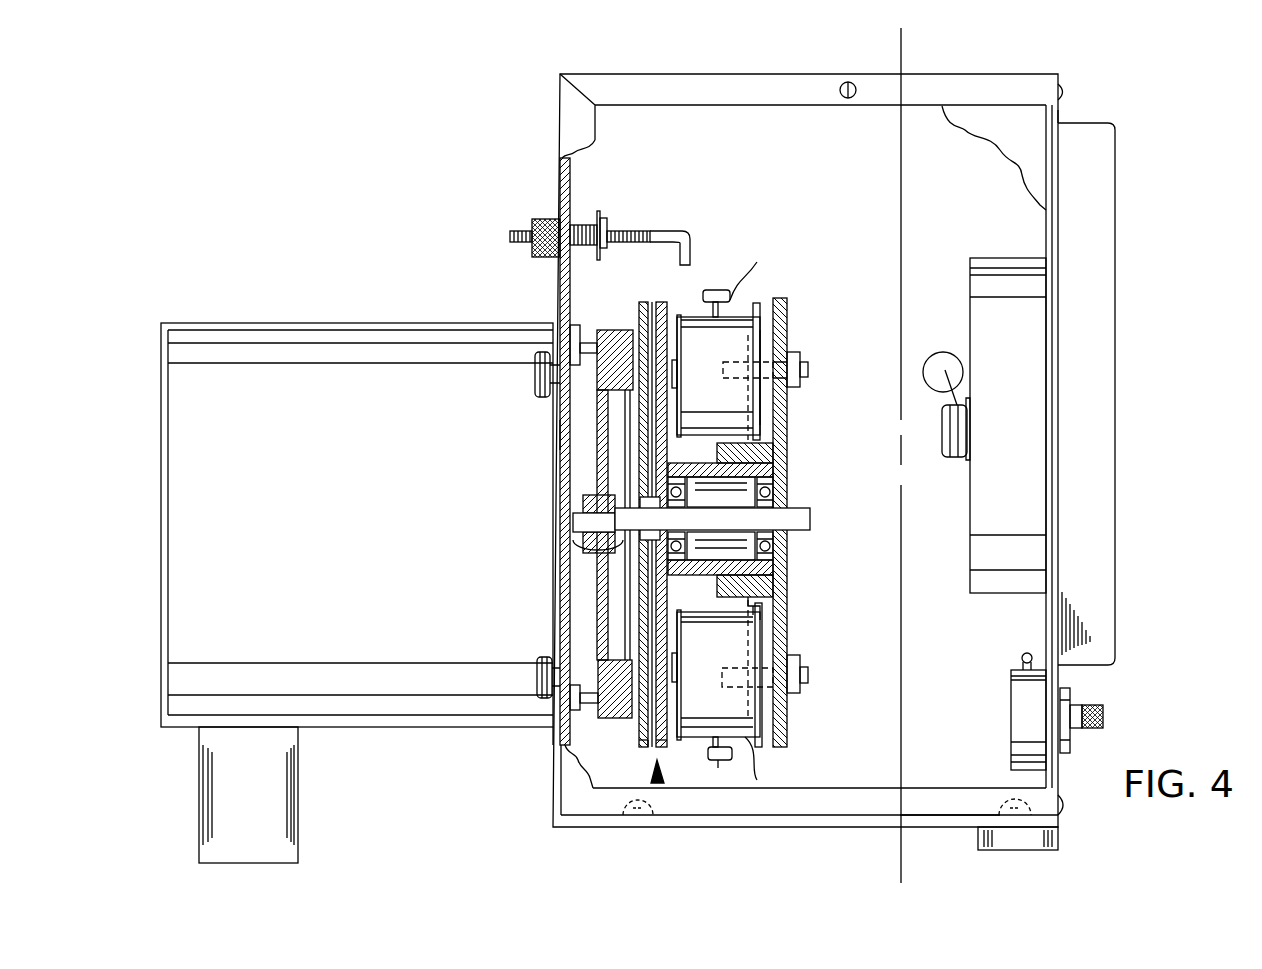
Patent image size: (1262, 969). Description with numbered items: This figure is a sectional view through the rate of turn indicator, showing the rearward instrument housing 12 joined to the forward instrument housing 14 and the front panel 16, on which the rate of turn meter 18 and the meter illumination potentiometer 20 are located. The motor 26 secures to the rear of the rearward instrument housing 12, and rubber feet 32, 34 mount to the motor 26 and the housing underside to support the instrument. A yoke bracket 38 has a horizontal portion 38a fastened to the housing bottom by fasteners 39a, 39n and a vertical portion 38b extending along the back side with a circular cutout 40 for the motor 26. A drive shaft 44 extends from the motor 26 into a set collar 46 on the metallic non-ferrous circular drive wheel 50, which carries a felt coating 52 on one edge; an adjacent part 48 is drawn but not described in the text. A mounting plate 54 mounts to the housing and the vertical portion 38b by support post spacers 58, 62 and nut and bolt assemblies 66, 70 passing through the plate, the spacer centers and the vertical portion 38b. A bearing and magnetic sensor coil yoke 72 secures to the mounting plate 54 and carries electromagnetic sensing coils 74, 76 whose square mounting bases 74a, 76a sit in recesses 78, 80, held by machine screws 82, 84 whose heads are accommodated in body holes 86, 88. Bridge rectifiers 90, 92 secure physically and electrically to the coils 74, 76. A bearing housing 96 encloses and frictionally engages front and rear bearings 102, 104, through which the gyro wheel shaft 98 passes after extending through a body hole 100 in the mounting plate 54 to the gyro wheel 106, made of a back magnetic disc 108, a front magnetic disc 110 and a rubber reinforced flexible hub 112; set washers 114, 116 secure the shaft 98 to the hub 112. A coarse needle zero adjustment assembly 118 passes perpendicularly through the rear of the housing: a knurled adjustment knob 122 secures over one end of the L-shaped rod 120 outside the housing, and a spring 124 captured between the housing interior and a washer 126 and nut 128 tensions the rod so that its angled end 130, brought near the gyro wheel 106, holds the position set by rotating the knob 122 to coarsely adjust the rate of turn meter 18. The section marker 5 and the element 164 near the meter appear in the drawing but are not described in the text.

The section line 5- 5 is at (863, 877).
The rearward instrument housing 12 is at (981, 88).
The forward instrument housing 14 is at (1010, 128).
The front panel 16 is at (1060, 117).
The rate of turn meter 18 is at (1105, 318).
The meter illumination potentiometer 20 is at (1017, 700).
The motor 26 is at (262, 363).
The rubber foot 32 is at (282, 825).
The rubber foot 34 is at (1018, 838).
The yoke bracket 38 is at (557, 410).
The horizontal portion 38a is at (938, 818).
The vertical portion 38b is at (557, 435).
The fastener 39a is at (640, 815).
The fastener 39n is at (1008, 800).
The circular cutout 40 is at (556, 738).
The drive shaft 44 is at (578, 520).
The set collar 46 is at (590, 507).
The collar 48 is at (600, 543).
The circular drive wheel 50 is at (608, 330).
The felt coating 52 is at (630, 328).
The mounting plate 54 is at (785, 302).
The support post spacer 58 is at (562, 320).
The support post spacer 62 is at (598, 650).
The nut and bolt assembly 66 is at (797, 363).
The nut and bolt assembly 70 is at (798, 668).
The bearing and magnetic sensor coil yoke 72 is at (768, 410).
The electromagnetic sensing coil 74 is at (698, 335).
The square mounting base 74a is at (758, 305).
The electromagnetic sensing coil 76 is at (703, 718).
The square mounting base 76a is at (762, 740).
The recess 78 is at (778, 452).
The recess 80 is at (773, 603).
The machine screw 82 is at (778, 365).
The machine screw 84 is at (792, 678).
The body hole 86 is at (788, 383).
The body hole 88 is at (777, 657).
The bridge rectifier 90 is at (717, 290).
The bridge rectifier 92 is at (732, 762).
The bearing housing 96 is at (770, 568).
The gyro wheel shaft 98 is at (800, 520).
The body hole 100 is at (780, 538).
The front bearing 102 is at (770, 490).
The rear bearing 104 is at (672, 485).
The gyro wheel 106 is at (658, 783).
The back magnetic disc 108 is at (640, 747).
The front magnetic disc 110 is at (657, 748).
The rubber reinforced flexible hub 112 is at (650, 747).
The set washer 114 is at (610, 557).
The set washer 116 is at (668, 495).
The coarse needle zero adjustment assembly 118 is at (490, 218).
The L-shaped rod 120 is at (675, 230).
The knurled adjustment knob 122 is at (537, 219).
The spring 124 is at (578, 222).
The washer 126 is at (600, 212).
The nut 128 is at (607, 222).
The L-shaped rod angled end 130 is at (688, 248).
The nut 164 is at (940, 352).